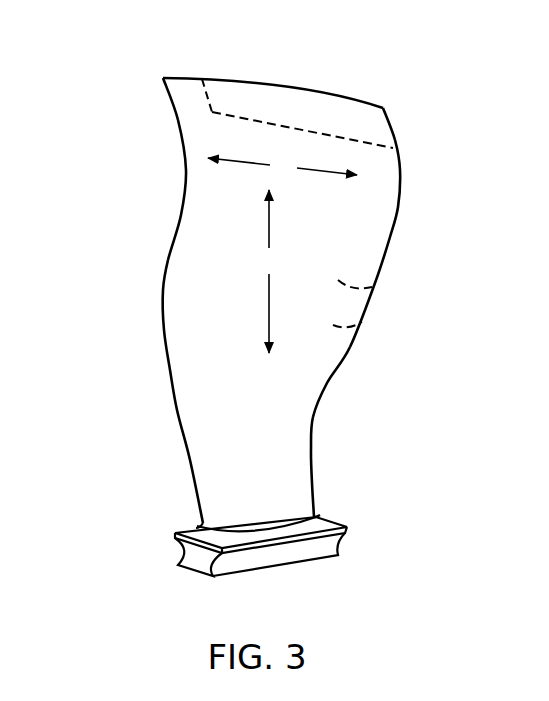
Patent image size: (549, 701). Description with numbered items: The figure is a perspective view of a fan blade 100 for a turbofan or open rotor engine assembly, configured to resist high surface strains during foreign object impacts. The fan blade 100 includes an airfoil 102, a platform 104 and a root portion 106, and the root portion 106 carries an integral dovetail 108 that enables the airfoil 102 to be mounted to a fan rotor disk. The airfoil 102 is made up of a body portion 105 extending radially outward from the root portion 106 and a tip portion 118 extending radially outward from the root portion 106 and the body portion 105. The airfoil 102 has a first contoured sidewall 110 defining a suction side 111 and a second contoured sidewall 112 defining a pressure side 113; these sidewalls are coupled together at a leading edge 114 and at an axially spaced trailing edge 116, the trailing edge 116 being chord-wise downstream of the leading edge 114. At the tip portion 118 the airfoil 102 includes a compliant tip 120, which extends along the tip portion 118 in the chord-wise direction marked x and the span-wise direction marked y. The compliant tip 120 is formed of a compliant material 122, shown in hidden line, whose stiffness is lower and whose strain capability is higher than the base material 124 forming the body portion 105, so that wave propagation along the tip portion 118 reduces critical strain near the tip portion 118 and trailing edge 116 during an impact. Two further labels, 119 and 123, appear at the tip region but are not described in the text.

The fan blade 100 is at (113, 125).
The airfoil 102 is at (372, 100).
The platform 104 is at (337, 523).
The body portion 105 is at (190, 215).
The root portion 106 is at (163, 553).
The dovetail 108 is at (283, 570).
The first contoured sidewall 110 is at (310, 383).
The suction side 111 is at (303, 430).
The second contoured sidewall 112 is at (362, 320).
The pressure side 113 is at (380, 280).
The leading edge 114 is at (162, 297).
The trailing edge 116 is at (398, 207).
The tip portion 118 is at (178, 62).
The tip region 119 is at (400, 117).
The compliant tip 120 is at (280, 65).
The compliant material 122 is at (317, 100).
The tip pocket 123 is at (240, 87).
The base material 124 is at (192, 357).